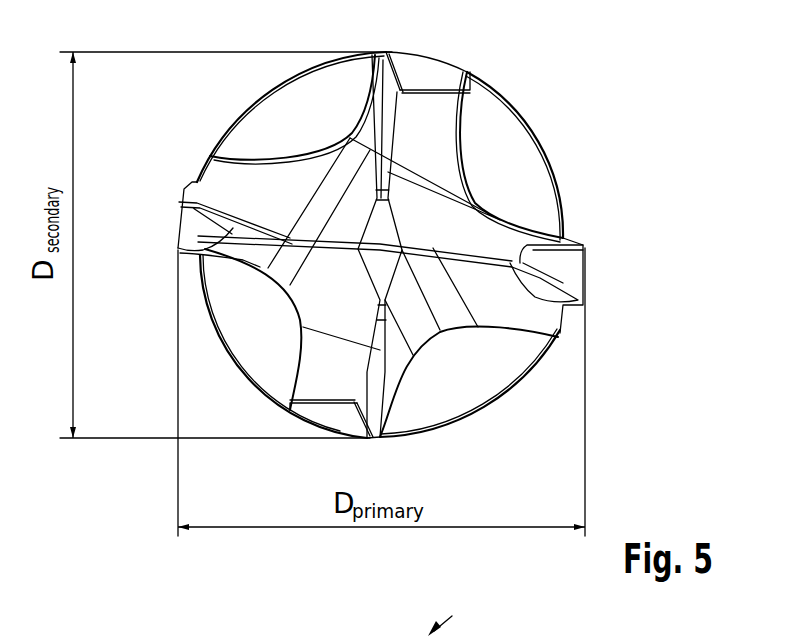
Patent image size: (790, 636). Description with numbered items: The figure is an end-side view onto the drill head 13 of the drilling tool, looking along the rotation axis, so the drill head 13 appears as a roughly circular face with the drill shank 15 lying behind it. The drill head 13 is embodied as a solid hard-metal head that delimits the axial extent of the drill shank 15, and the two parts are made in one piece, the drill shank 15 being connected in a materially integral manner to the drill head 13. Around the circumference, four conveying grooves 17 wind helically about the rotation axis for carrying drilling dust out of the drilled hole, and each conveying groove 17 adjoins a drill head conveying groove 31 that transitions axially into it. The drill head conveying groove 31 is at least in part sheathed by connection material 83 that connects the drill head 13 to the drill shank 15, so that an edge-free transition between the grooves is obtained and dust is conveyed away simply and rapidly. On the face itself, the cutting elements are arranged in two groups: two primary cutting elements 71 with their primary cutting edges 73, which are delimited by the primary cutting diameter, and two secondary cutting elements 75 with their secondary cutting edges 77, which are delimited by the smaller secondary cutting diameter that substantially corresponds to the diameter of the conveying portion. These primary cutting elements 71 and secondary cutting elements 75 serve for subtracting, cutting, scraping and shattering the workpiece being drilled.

The drill head 13 is at (207, 123).
The drill shank 15 is at (568, 179).
The conveying groove 17 is at (387, 237).
The drill head conveying groove 31 is at (290, 117).
The primary cutting element 71 is at (225, 182).
The primary cutting edge 73 is at (178, 247).
The secondary cutting element 75 is at (433, 124).
The secondary cutting edge 77 is at (378, 62).
The connection material 83 is at (428, 55).